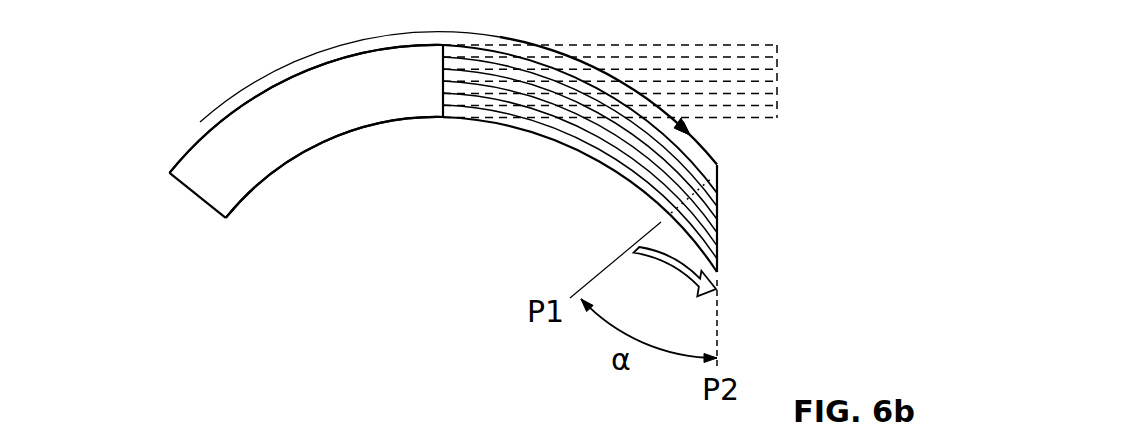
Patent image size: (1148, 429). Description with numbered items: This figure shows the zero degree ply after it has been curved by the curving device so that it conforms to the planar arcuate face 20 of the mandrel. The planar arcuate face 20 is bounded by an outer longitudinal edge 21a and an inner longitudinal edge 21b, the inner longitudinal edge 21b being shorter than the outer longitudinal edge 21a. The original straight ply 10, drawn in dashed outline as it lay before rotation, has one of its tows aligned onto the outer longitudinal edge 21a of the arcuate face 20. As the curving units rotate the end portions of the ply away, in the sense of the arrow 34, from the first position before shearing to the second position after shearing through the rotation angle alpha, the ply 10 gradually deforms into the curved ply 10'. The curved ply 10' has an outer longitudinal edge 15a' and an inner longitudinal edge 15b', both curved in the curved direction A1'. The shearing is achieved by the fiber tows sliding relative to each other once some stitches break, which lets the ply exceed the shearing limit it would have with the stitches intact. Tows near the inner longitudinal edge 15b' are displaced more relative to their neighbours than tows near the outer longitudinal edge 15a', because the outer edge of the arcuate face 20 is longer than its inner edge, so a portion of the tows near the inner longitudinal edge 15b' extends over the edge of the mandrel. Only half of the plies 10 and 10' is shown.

The planar arcuate face 20 is at (314, 127).
The outer longitudinal edge 21a is at (223, 118).
The inner longitudinal edge 21b is at (370, 128).
The curved direction A1' is at (350, 66).
The ply 10' is at (557, 164).
The outer longitudinal edge 15a' is at (580, 98).
The inner longitudinal edge 15b' is at (580, 194).
The ply 10 is at (658, 81).
The arrow 34 is at (623, 336).